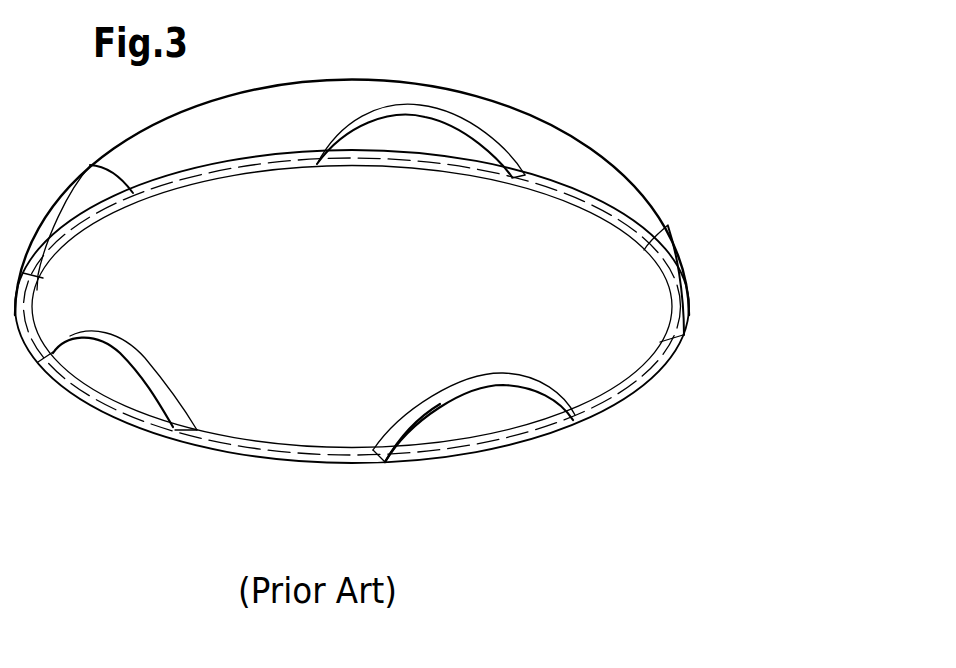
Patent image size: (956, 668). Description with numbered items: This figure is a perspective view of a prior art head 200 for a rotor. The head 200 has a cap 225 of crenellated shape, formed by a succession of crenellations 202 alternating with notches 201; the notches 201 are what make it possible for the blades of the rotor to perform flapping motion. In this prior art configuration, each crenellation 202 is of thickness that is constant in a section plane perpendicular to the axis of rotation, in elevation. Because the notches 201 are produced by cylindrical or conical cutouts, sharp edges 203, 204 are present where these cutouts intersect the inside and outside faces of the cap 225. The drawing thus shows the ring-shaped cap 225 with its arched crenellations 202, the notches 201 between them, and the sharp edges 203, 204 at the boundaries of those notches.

The prior art head 200 is at (526, 84).
The cap 225 is at (603, 152).
The crenellation 202 is at (640, 397).
The notch 201 is at (532, 403).
The sharp edge 203 is at (432, 407).
The sharp edge 204 is at (485, 373).